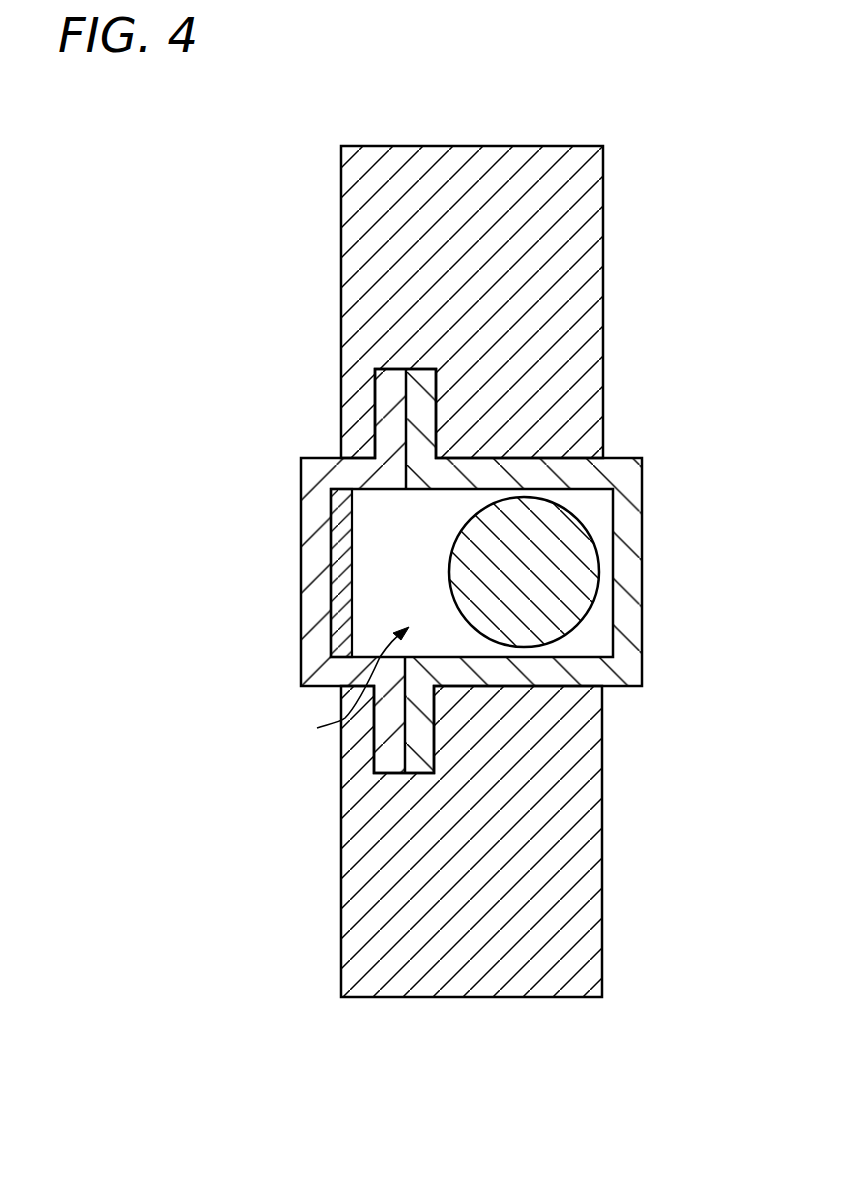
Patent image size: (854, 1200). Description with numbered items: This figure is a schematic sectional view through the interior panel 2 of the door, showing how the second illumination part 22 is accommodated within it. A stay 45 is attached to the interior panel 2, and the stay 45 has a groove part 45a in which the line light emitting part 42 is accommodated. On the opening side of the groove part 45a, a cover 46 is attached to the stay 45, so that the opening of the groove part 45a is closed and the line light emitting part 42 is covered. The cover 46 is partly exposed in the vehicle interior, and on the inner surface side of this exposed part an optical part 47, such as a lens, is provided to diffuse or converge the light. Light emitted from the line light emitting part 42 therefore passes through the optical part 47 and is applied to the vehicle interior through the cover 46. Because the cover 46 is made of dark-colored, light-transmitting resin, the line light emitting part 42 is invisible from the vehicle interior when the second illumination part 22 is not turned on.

The interior panel 2 is at (341, 242).
The second illumination part 22 is at (347, 685).
The line light emitting part 42 is at (583, 518).
The stay 45 is at (548, 457).
The groove part 45a is at (465, 490).
The cover 46 is at (328, 458).
The optical part 47 is at (352, 541).